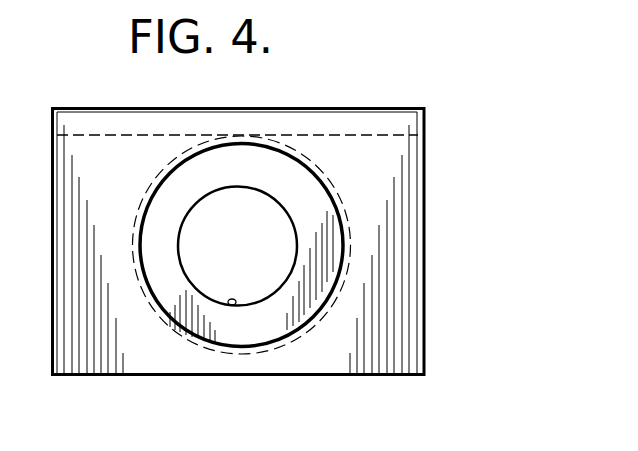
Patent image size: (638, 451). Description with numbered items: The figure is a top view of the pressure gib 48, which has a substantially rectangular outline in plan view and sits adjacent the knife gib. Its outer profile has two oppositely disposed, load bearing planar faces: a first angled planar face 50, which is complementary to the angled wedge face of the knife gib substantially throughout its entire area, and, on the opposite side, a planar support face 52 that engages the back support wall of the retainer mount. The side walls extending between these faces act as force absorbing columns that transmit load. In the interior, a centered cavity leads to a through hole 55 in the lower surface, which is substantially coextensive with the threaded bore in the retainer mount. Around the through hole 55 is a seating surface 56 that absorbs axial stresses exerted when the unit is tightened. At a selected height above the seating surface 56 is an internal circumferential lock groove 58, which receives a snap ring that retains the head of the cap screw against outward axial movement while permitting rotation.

The pressure gib 48 is at (436, 300).
The first angled planar face 50 is at (347, 108).
The planar support face 52 is at (124, 372).
The through hole 55 is at (231, 305).
The seating surface 56 is at (300, 205).
The internal circumferential lock groove 58 is at (290, 349).